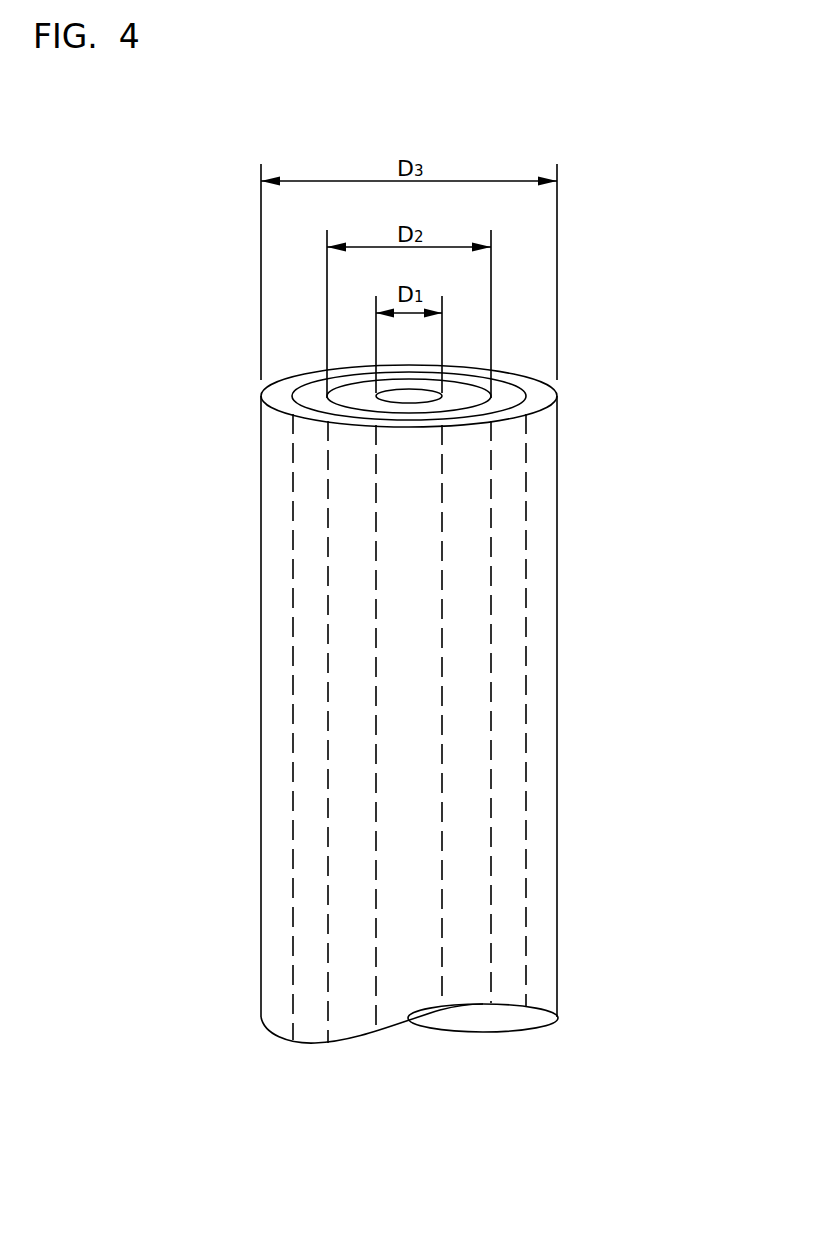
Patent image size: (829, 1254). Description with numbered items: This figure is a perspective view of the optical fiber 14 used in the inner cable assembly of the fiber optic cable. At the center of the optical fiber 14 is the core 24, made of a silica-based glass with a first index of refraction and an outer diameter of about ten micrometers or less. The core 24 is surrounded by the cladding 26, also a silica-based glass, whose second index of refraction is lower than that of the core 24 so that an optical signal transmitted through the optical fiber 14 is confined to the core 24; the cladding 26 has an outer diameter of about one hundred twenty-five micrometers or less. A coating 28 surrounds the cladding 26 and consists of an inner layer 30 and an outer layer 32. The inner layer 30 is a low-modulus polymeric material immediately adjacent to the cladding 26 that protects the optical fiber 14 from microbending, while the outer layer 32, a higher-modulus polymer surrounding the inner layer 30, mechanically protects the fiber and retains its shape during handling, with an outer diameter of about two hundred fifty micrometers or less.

The optical fiber 14 is at (214, 513).
The core 24 is at (442, 507).
The cladding 26 is at (492, 620).
The coating 28 is at (575, 672).
The inner layer 30 is at (293, 795).
The outer layer 32 is at (260, 713).